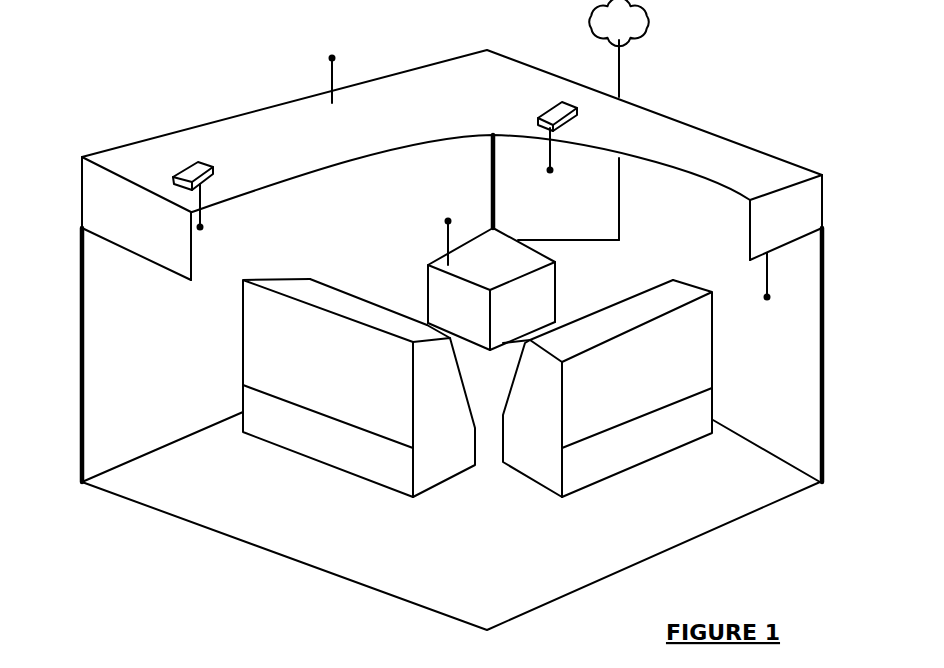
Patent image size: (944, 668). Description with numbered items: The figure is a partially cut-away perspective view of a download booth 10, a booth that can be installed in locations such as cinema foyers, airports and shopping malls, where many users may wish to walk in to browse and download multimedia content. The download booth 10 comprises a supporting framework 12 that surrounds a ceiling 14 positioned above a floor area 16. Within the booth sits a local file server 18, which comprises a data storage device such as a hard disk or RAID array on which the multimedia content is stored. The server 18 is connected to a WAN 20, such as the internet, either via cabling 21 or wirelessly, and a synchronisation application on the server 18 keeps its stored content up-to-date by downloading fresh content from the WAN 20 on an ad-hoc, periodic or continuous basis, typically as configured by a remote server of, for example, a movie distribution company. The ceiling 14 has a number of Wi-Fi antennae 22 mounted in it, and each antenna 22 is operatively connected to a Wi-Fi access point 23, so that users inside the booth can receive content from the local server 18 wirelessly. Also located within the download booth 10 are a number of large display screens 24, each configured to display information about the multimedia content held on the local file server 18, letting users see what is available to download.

The download booth 10 is at (222, 108).
The supporting framework 12 is at (82, 366).
The ceiling 14 is at (452, 139).
The floor area 16 is at (451, 521).
The local file server 18 is at (491, 289).
The WAN 20 is at (618, 23).
The cabling 21 is at (619, 81).
The Wi-Fi antennae 22 is at (327, 77).
The Wi-Fi access point 23 is at (190, 168).
The display screens 24 is at (477, 388).